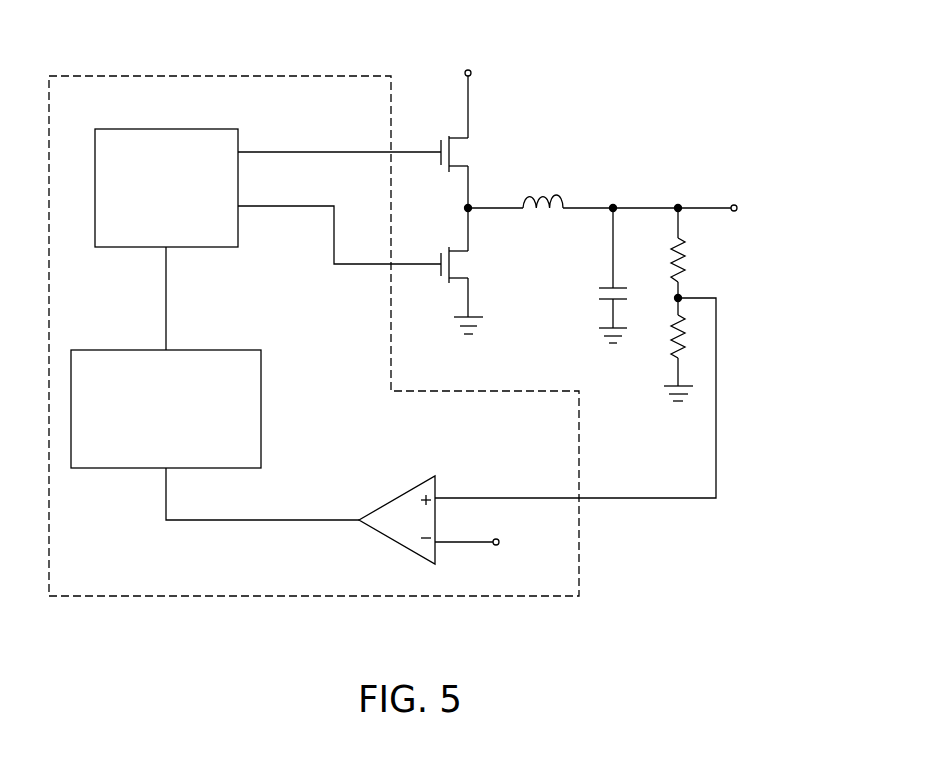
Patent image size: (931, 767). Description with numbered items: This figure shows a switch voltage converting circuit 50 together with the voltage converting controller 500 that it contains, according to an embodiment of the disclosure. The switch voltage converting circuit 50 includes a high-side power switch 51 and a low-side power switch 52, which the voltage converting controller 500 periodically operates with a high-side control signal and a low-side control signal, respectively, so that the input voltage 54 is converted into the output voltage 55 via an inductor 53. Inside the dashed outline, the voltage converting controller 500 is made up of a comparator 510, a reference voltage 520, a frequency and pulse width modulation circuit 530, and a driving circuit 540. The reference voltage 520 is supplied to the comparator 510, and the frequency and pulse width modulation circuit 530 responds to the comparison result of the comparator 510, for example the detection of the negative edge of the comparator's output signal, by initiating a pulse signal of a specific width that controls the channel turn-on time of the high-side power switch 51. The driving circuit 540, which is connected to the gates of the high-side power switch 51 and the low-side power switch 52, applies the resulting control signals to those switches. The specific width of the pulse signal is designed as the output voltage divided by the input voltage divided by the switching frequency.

The switch voltage converting circuit 50 is at (753, 69).
The voltage converting controller 500 is at (360, 105).
The driving circuit 540 is at (184, 223).
The frequency and pulse width modulation circuit 530 is at (184, 459).
The comparator 510 is at (420, 532).
The reference voltage 520 is at (499, 542).
The high-side power switch 51 is at (461, 138).
The low-side power switch 52 is at (461, 251).
The inductor 53 is at (555, 194).
The input voltage 54 is at (468, 69).
The output voltage 55 is at (737, 208).